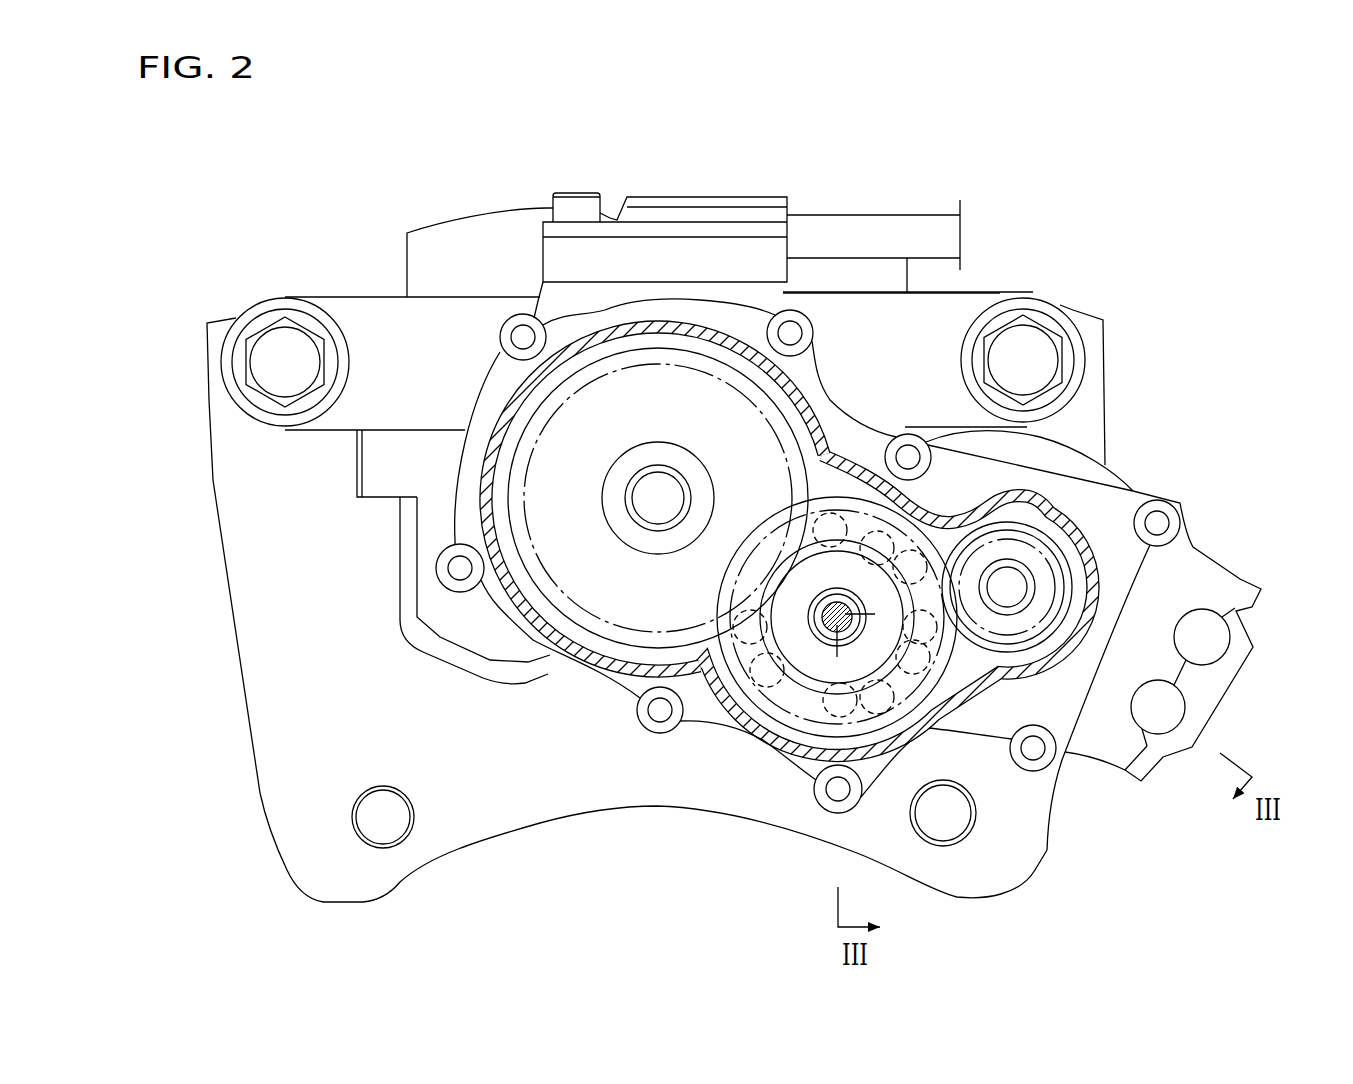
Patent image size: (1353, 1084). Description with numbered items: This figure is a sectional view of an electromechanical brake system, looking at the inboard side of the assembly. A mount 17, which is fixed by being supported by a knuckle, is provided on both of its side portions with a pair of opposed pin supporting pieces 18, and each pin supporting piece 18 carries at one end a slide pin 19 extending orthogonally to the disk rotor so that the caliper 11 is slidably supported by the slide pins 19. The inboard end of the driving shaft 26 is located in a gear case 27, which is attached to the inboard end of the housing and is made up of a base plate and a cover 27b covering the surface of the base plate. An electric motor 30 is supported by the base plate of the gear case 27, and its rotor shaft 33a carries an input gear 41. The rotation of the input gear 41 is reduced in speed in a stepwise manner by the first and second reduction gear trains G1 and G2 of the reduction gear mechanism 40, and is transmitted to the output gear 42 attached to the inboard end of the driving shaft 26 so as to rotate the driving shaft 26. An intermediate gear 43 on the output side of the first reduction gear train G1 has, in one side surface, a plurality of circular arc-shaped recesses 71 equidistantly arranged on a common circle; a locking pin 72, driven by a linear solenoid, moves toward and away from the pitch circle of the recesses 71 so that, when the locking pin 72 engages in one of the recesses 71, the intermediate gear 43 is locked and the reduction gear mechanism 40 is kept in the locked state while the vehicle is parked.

The caliper 11 is at (430, 607).
The mount 17 is at (487, 830).
The pin supporting pieces 18 is at (230, 437).
The slide pin 19 is at (287, 340).
The driving shaft 26 is at (653, 510).
The gear case 27 is at (800, 380).
The cover 27b is at (810, 418).
The electric motor 30 is at (1120, 470).
The rotor shaft 33a is at (1040, 578).
The reduction gear mechanism 40 is at (555, 585).
The input gear 41 is at (1065, 607).
The output gear 42 is at (550, 607).
The intermediate gear 43 is at (793, 713).
The circular arc-shaped recesses 71 is at (870, 700).
The locking pin 72 is at (815, 720).
The first reduction gear train G1 is at (960, 638).
The second reduction gear train G2 is at (707, 650).